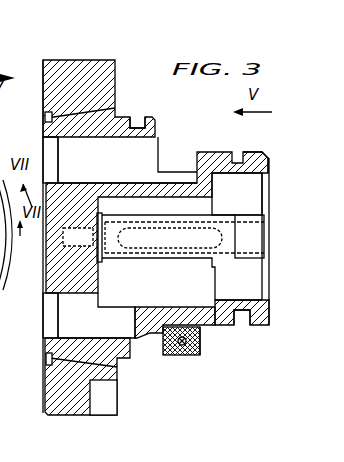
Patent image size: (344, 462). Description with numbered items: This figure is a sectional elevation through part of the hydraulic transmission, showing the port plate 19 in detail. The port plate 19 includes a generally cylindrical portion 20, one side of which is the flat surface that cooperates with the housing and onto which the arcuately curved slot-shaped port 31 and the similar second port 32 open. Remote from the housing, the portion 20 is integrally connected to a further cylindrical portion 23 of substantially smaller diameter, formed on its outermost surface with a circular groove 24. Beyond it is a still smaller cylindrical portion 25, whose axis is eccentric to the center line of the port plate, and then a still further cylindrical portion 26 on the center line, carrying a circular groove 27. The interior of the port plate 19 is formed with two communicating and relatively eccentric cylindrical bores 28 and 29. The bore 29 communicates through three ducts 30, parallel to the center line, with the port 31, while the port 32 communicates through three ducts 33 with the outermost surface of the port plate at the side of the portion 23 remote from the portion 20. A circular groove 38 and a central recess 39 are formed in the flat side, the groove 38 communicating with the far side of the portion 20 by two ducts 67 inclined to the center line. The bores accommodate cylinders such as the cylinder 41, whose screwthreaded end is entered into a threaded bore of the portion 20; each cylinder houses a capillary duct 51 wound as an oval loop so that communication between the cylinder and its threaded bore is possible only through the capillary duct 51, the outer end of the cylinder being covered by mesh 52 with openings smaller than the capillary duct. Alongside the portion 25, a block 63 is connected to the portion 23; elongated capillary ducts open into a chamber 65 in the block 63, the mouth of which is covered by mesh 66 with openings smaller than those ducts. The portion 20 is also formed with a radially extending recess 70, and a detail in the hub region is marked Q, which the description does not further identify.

The port plate 19 is at (63, 56).
The generally cylindrical portion 20 is at (87, 393).
The further cylindrical portion 23 is at (122, 358).
The circular groove 24 is at (138, 124).
The further cylindrical portion 25 is at (207, 326).
The still further cylindrical portion 26 is at (253, 157).
The circular groove 27 is at (242, 322).
The cylindrical bore 28 is at (253, 277).
The cylindrical bore 29 is at (203, 206).
The ducts 30 is at (75, 316).
The arcuately curved slot-shaped port 31 is at (50, 295).
The second port 32 is at (35, 158).
The ducts 33 is at (160, 153).
The circular groove 38 is at (45, 117).
The central recess 39 is at (43, 237).
The cylinder 41 is at (180, 256).
The capillary duct 51 is at (147, 253).
The mesh 52 is at (263, 233).
The block 63 is at (222, 356).
The chamber 65 is at (196, 361).
The mesh 66 is at (182, 352).
The ducts 67 is at (116, 107).
The radially extending recess 70 is at (121, 404).
The section detail Q is at (63, 237).